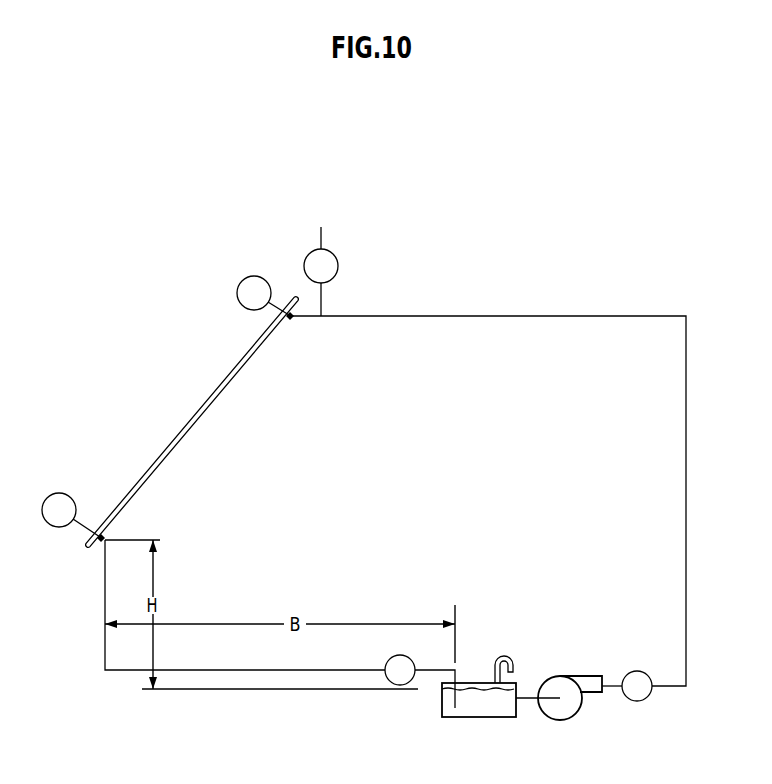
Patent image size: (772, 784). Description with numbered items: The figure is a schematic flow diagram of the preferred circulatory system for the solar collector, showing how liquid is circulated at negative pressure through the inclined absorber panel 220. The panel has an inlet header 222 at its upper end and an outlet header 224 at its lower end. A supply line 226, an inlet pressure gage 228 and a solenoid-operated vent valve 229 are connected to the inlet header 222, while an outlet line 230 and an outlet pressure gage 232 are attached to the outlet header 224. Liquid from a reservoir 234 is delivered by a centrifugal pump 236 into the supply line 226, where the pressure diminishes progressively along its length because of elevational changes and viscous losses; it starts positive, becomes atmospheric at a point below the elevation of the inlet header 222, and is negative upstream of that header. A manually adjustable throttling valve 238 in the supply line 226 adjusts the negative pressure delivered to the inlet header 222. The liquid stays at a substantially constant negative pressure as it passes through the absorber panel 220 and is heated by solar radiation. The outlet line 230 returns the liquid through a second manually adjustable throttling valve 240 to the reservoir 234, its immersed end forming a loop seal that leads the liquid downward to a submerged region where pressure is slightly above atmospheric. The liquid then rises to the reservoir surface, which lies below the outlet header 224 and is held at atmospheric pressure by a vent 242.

The absorber panel 220 is at (199, 413).
The inlet header 222 is at (288, 319).
The outlet header 224 is at (104, 538).
The supply line 226 is at (686, 355).
The inlet pressure gage 228 is at (240, 302).
The solenoid-operated vent valve 229 is at (338, 267).
The outlet line 230 is at (112, 671).
The outlet pressure gage 232 is at (64, 492).
The reservoir 234 is at (488, 713).
The centrifugal pump 236 is at (580, 677).
The throttling valve 238 is at (640, 702).
The throttling valve 240 is at (388, 660).
The vent 242 is at (509, 656).